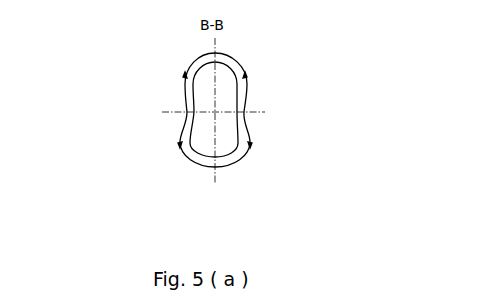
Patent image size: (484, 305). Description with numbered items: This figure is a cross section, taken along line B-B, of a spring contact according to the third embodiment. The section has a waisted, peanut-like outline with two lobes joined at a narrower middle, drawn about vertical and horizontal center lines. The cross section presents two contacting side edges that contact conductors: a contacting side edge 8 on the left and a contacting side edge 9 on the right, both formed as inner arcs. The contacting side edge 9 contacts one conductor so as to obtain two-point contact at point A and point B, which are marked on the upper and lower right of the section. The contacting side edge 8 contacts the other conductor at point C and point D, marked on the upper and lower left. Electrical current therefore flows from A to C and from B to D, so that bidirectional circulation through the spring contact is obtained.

The contacting side edge 8 is at (185, 95).
The contacting side edge 9 is at (245, 95).
The point A is at (245, 76).
The point B is at (272, 155).
The point C is at (185, 76).
The point D is at (180, 144).